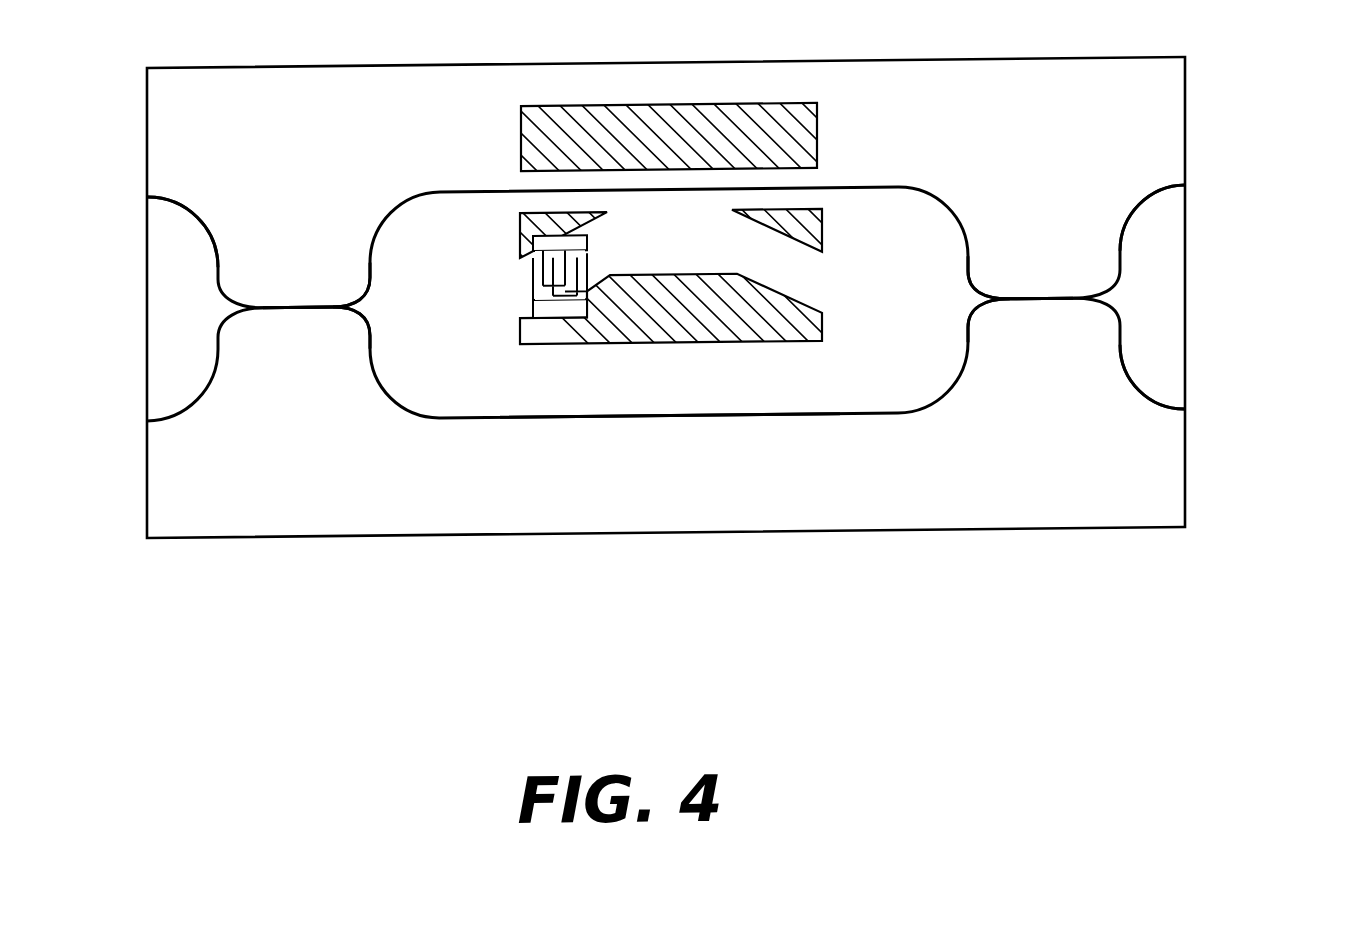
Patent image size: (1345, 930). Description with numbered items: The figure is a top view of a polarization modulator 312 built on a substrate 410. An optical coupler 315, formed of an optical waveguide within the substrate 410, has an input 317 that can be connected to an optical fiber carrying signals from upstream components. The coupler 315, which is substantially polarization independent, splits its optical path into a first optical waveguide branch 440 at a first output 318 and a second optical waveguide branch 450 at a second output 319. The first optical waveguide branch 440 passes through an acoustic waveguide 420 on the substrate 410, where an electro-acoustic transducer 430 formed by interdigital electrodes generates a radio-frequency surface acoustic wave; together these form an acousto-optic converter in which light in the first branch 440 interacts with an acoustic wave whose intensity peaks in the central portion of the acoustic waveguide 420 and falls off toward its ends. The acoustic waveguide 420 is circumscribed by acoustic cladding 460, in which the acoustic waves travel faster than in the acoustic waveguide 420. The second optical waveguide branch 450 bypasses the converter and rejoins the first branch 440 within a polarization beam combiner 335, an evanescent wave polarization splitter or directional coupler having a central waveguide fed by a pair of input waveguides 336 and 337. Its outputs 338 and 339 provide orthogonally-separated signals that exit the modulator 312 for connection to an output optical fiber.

The polarization modulator 312 is at (432, 624).
The optical coupler 315 is at (305, 312).
The input 317 is at (190, 213).
The first output 318 is at (352, 295).
The second output 319 is at (360, 313).
The polarization beam combiner 335 is at (1052, 310).
The input waveguide 336 is at (968, 267).
The input waveguide 337 is at (990, 310).
The output 338 is at (1185, 420).
The output 339 is at (1185, 195).
The substrate 410 is at (1085, 538).
The acoustic waveguide 420 is at (673, 228).
The electro-acoustic transducer 430 is at (562, 245).
The first optical waveguide branch 440 is at (452, 191).
The second optical waveguide branch 450 is at (558, 424).
The acoustic cladding 460 is at (768, 108).